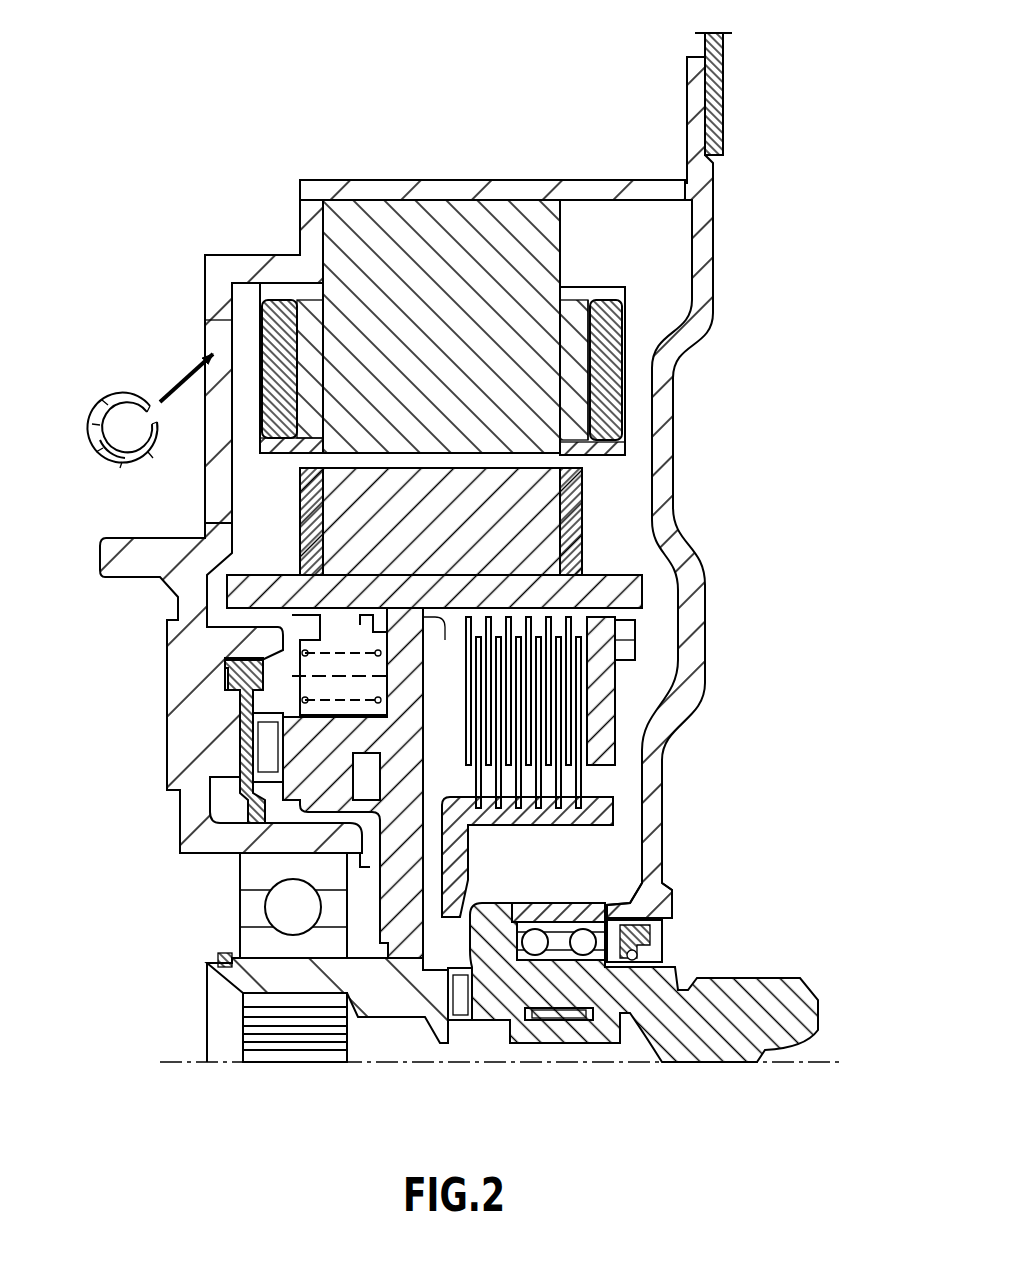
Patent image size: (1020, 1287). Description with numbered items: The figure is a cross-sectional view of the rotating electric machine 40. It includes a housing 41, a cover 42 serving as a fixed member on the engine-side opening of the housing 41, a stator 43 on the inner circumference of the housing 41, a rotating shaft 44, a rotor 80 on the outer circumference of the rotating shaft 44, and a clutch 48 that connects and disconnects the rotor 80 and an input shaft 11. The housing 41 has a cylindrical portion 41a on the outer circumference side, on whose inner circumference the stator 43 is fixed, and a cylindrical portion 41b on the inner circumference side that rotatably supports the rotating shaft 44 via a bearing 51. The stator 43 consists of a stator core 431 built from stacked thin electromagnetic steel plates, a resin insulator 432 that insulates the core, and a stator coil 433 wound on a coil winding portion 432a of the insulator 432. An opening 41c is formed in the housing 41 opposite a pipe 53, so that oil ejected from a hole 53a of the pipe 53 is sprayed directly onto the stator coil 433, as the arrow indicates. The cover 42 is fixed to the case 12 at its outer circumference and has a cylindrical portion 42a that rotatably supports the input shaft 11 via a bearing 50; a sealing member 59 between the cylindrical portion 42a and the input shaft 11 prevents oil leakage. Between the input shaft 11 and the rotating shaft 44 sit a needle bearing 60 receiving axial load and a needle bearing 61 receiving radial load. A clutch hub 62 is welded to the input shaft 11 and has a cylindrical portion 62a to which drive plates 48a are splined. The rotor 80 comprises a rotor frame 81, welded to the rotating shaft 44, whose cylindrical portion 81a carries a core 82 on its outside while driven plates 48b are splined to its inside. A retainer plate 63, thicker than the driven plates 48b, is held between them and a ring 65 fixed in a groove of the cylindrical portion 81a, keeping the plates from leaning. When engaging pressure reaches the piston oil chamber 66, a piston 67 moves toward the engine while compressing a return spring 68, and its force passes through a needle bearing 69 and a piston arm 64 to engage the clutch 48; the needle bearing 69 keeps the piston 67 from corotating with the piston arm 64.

The input shaft 11 is at (805, 980).
The case 12 is at (725, 48).
The rotating electric machine 40 is at (162, 100).
The housing 41 is at (203, 267).
The cylindrical portion 41a is at (497, 196).
The cylindrical portion 41b is at (228, 866).
The opening 41c is at (220, 524).
The cover 42 is at (700, 240).
The cylindrical portion 42a is at (640, 920).
The stator 43 is at (529, 285).
The stator core 431 is at (443, 266).
The insulator 432 is at (629, 291).
The coil winding portion 432a is at (580, 385).
The stator coil 433 is at (623, 345).
The rotating shaft 44 is at (207, 963).
The clutch 48 is at (625, 712).
The drive plates 48a is at (578, 745).
The driven plates 48b is at (566, 720).
The bearing 50 is at (583, 952).
The bearing 51 is at (265, 912).
The pipe 53 is at (100, 410).
The hole 53a is at (133, 420).
The sealing member 59 is at (665, 950).
The needle bearing 60 is at (460, 1000).
The needle bearing 61 is at (565, 1014).
The clutch hub 62 is at (592, 800).
The cylindrical portion 62a is at (592, 820).
The retainer plate 63 is at (602, 680).
The piston arm 64 is at (212, 820).
The ring 65 is at (622, 652).
The piston oil chamber 66 is at (237, 838).
The piston 67 is at (228, 670).
The return spring 68 is at (277, 653).
The needle bearing 69 is at (262, 745).
The rotor 80 is at (367, 540).
The rotor frame 81 is at (235, 592).
The cylindrical portion 81a is at (622, 578).
The core 82 is at (300, 541).